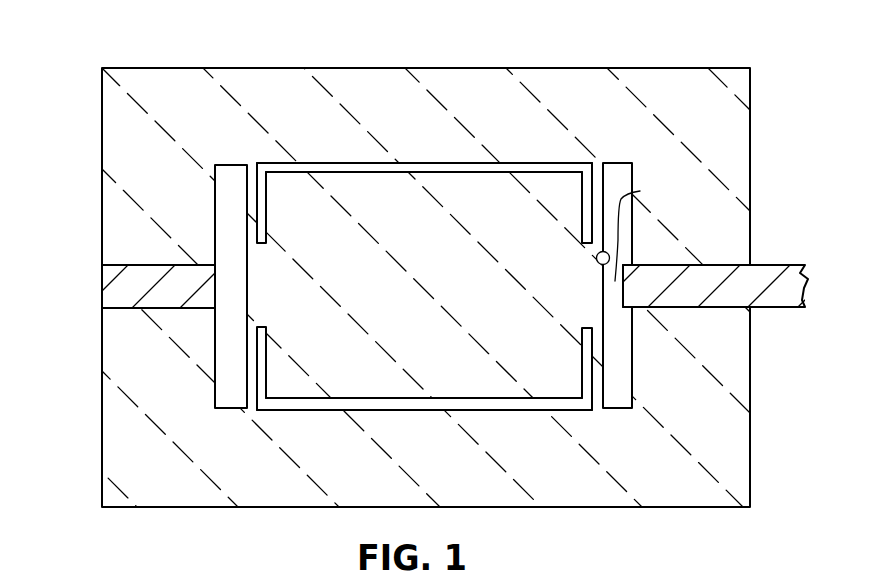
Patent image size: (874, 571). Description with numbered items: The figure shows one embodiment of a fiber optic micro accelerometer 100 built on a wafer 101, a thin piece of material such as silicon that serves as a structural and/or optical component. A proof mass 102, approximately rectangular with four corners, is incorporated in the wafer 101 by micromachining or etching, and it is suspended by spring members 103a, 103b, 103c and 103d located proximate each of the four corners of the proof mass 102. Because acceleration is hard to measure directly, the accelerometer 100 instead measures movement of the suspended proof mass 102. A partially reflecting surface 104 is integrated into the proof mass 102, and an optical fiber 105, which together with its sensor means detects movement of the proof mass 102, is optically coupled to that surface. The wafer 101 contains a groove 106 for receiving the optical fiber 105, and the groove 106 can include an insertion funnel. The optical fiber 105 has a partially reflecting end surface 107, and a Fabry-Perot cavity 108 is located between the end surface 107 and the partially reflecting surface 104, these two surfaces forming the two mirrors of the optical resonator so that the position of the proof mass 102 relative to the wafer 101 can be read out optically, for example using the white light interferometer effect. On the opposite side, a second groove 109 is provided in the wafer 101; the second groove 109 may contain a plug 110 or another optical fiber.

The fiber optic micro accelerometer 100 is at (270, 45).
The wafer 101 is at (665, 474).
The proof mass 102 is at (457, 362).
The spring member 103a is at (596, 197).
The spring member 103b is at (602, 365).
The spring member 103c is at (252, 362).
The spring member 103d is at (257, 222).
The partially reflecting surface 104 is at (596, 256).
The optical fiber 105 is at (770, 264).
The groove 106 is at (727, 308).
The partially reflecting end surface 107 is at (622, 288).
The Fabry-Perot cavity 108 is at (640, 191).
The second groove 109 is at (127, 266).
The plug 110 is at (102, 292).